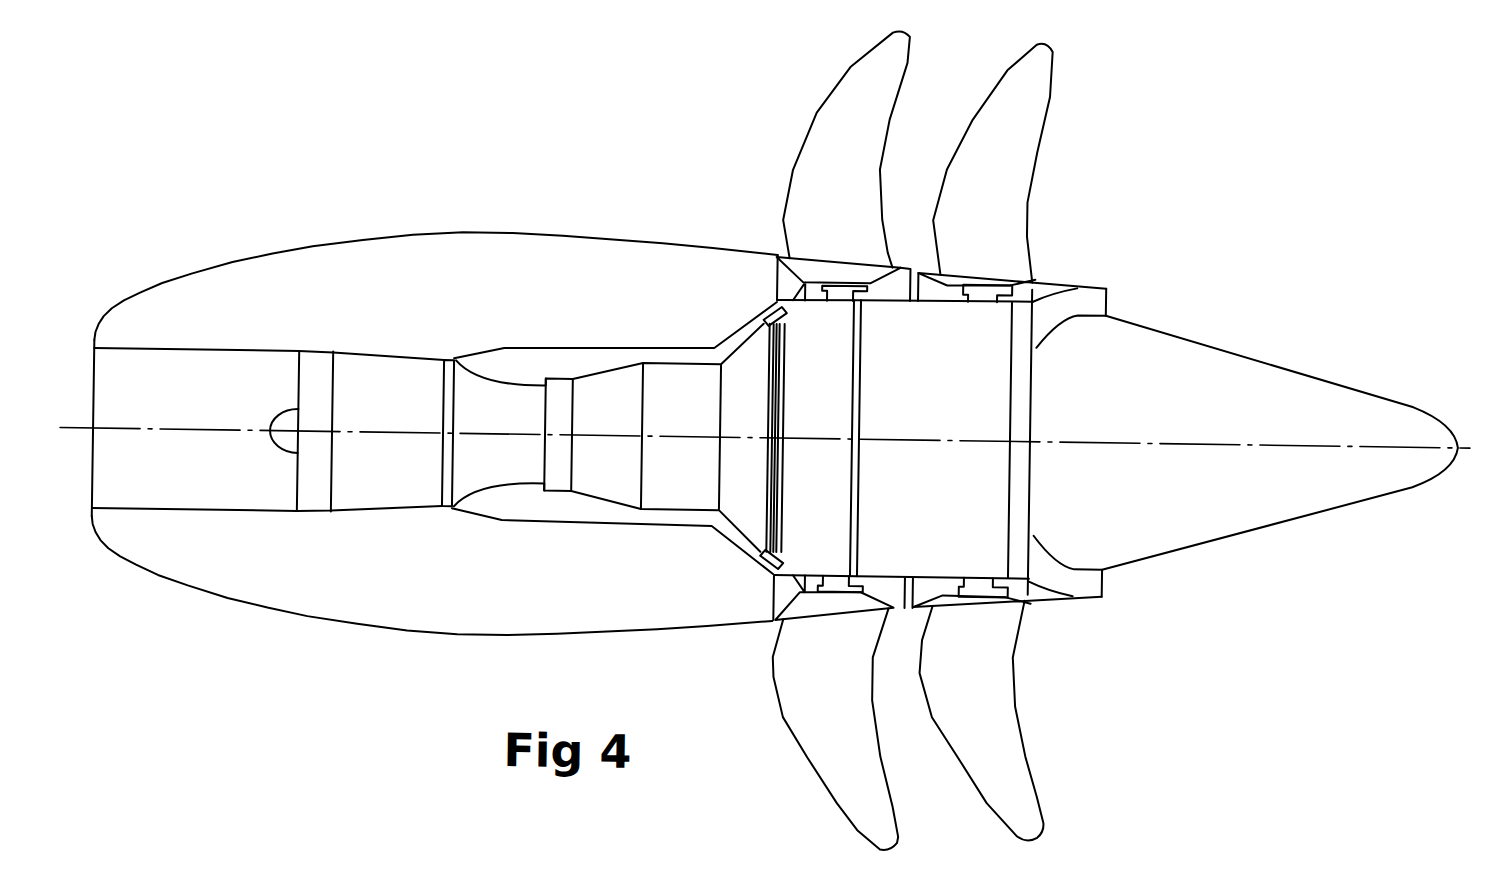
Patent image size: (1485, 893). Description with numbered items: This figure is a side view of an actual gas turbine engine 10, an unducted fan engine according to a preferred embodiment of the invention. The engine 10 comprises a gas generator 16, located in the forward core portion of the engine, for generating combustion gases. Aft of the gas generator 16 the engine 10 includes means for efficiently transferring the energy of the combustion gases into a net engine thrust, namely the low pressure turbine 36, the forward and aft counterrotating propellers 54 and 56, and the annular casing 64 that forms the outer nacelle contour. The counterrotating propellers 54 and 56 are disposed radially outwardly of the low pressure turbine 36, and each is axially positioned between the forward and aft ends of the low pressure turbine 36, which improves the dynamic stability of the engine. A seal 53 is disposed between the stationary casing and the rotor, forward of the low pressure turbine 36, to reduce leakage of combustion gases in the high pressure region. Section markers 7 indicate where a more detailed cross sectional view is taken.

The gas turbine engine 10 is at (240, 222).
The annular casing 64 is at (447, 236).
The gas generator 16 is at (551, 373).
The seal 53 is at (765, 306).
The forward propellers 54 is at (817, 203).
The aft propellers 56 is at (964, 203).
The low pressure turbine (LPT) 36 is at (910, 250).
The section line for FIG. 7 is at (754, 135).